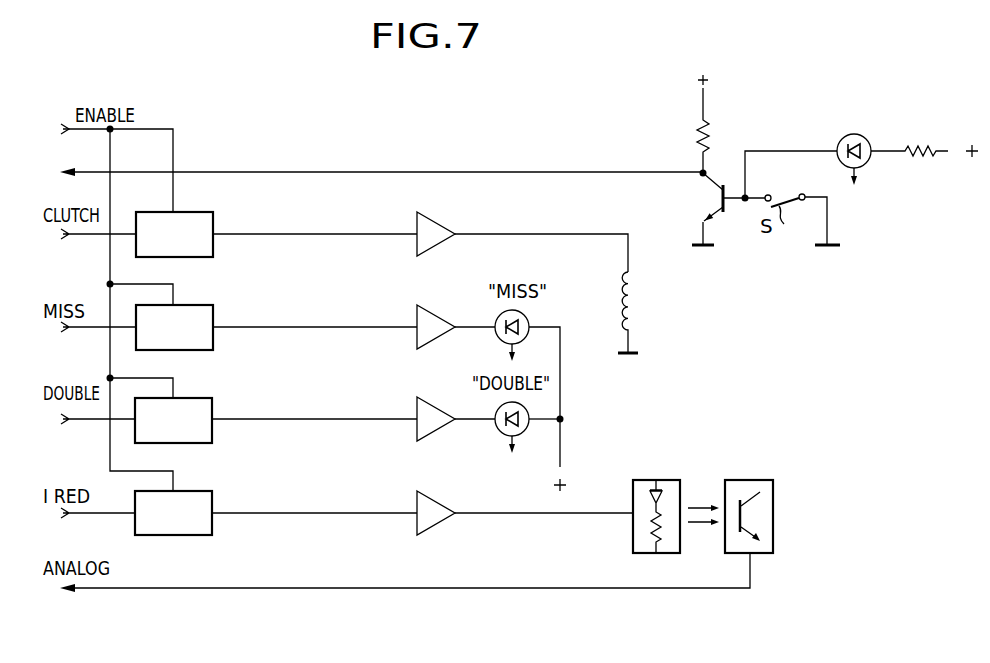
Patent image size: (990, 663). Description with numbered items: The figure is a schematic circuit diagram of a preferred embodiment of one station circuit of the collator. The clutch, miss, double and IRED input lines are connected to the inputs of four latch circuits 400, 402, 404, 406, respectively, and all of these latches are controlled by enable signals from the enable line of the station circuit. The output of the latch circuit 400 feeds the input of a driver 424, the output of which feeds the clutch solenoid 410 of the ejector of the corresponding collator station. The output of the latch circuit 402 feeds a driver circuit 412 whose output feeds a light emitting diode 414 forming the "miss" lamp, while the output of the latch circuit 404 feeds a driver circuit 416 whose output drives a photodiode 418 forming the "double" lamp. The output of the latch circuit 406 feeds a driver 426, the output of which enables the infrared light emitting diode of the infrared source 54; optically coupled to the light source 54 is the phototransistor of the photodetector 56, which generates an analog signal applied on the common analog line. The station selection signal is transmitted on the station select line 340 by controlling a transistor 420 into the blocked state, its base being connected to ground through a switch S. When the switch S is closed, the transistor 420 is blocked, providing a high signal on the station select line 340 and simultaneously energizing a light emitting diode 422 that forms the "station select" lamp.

The station select line 340 is at (381, 163).
The latch circuit 400 is at (215, 215).
The latch circuit 402 is at (215, 308).
The latch circuit 404 is at (214, 398).
The latch circuit 406 is at (212, 492).
The clutch solenoid 410 is at (630, 297).
The driver circuit 412 is at (428, 312).
The light emitting diode 414 is at (530, 318).
The driver circuit 416 is at (433, 435).
The photodiode 418 is at (528, 410).
The transistor 420 is at (715, 196).
The light emitting diode 422 is at (846, 136).
The driver 424 is at (438, 222).
The driver 426 is at (438, 502).
The infrared source 54 is at (660, 478).
The photodetector 56 is at (752, 478).